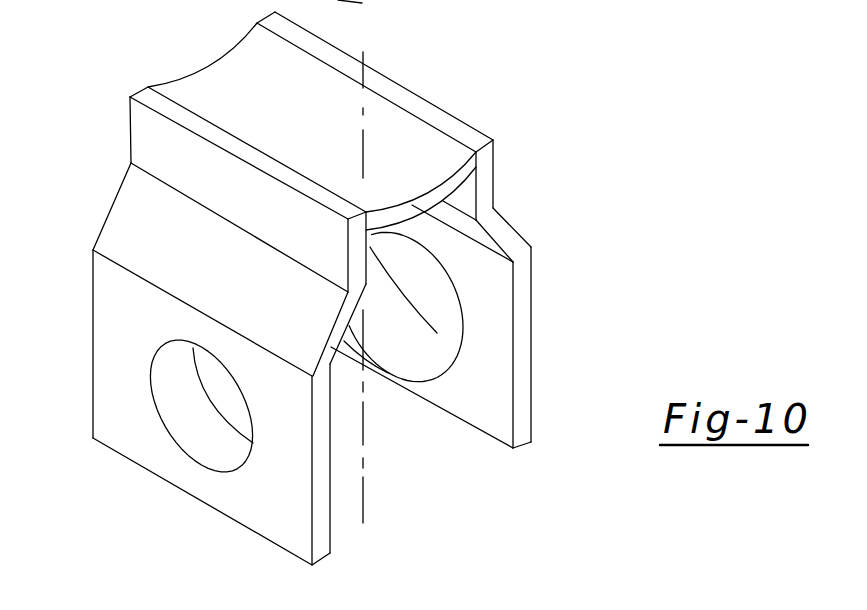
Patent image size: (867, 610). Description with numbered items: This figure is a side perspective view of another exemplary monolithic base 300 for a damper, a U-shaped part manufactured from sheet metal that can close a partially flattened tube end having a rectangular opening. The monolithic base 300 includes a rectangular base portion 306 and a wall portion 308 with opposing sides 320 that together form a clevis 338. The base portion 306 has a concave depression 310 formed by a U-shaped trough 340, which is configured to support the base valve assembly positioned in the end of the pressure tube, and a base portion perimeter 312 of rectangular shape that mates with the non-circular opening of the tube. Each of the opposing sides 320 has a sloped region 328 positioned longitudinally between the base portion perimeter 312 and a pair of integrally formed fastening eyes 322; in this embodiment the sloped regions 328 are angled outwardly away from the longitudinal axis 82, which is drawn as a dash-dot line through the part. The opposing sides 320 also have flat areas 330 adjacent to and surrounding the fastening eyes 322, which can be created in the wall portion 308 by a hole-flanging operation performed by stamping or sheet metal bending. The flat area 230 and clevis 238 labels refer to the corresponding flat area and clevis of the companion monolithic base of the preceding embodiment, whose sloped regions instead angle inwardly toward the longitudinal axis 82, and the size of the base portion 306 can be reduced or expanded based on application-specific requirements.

The longitudinal axis 82 is at (363, 497).
The flat area 230 is at (543, 0).
The clevis 238 is at (407, 3).
The monolithic base 300 is at (345, 289).
The base portion 306 is at (266, 115).
The wall portion 308 is at (339, 337).
The concave depression 310 is at (185, 80).
The base portion perimeter 312 is at (177, 154).
The opposing sides 320 is at (320, 538).
The integrally formed fastening eye 322 is at (213, 388).
The sloped region 328 is at (156, 230).
The flat area 330 is at (252, 492).
The clevis 338 is at (483, 482).
The U-shaped trough 340 is at (232, 90).